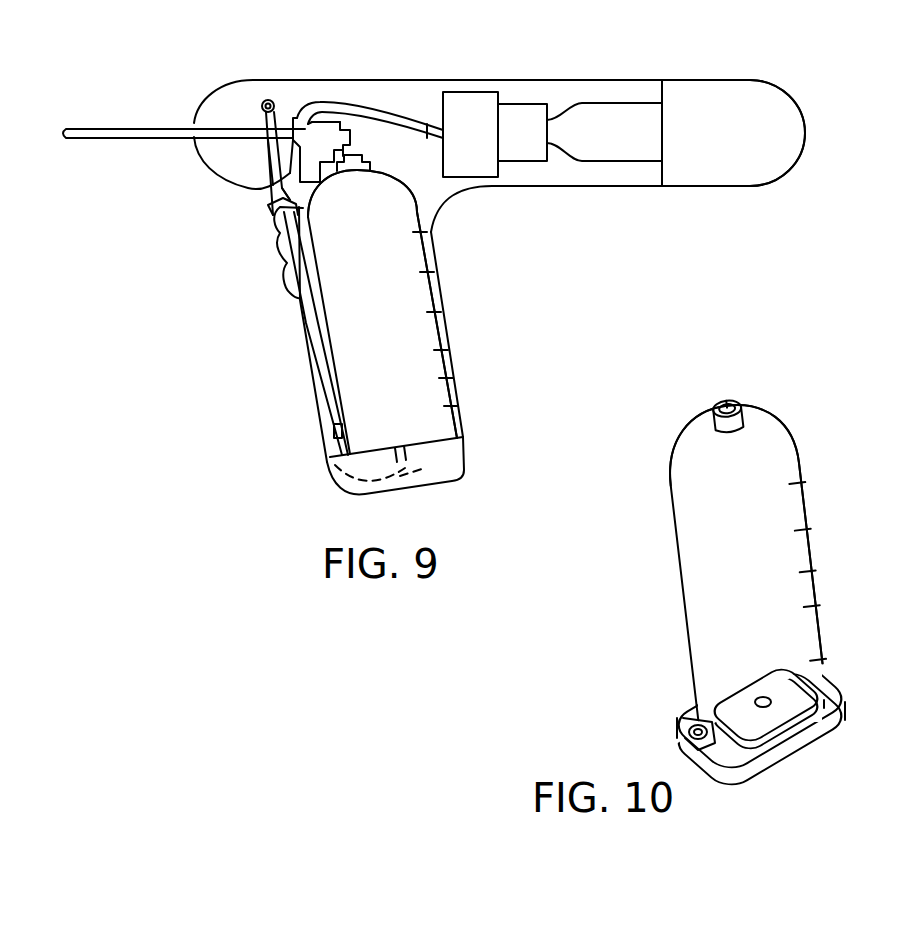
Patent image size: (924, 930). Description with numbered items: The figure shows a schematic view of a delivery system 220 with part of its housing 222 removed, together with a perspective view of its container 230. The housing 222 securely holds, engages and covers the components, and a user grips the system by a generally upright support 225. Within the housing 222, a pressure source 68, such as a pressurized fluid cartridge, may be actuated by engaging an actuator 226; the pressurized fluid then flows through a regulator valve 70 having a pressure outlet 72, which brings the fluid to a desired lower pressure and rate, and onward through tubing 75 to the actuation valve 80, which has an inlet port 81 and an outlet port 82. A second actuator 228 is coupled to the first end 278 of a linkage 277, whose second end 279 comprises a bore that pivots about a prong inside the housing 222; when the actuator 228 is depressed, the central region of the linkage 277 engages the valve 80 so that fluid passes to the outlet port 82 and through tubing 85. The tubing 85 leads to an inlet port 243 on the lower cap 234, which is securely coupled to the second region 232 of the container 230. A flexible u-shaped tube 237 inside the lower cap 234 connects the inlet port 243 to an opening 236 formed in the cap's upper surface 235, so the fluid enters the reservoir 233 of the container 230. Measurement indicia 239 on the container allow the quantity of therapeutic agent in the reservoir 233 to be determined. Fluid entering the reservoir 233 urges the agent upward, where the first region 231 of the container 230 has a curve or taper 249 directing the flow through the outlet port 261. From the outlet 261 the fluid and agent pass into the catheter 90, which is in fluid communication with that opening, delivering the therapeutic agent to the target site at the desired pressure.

In FIG. 9, the pressure source 68 is at (606, 153).
In FIG. 9, the regulator valve 70 is at (514, 162).
In FIG. 9, the pressure outlet 72 is at (427, 112).
In FIG. 9, the tubing 75 is at (368, 108).
In FIG. 9, the actuation valve 80 is at (290, 112).
In FIG. 9, the inlet port 81 is at (328, 108).
In FIG. 9, the outlet port 82 is at (278, 180).
In FIG. 9, the tubing 85 is at (313, 352).
In FIG. 9, the catheter 90 is at (126, 120).
In FIG. 9, the system 220 is at (226, 64).
In FIG. 9, the housing 222 is at (564, 93).
In FIG. 9, the generally upright support 225 is at (438, 303).
In FIG. 9, the actuator 226 is at (733, 178).
In FIG. 9, the actuator 228 is at (280, 262).
In FIG. 9, the container 230 is at (445, 329).
In FIG. 10, the container 230 is at (692, 607).
In FIG. 10, the first region 231 is at (770, 446).
In FIG. 10, the second region 232 is at (838, 710).
In FIG. 9, the reservoir 233 is at (436, 410).
In FIG. 10, the reservoir 233 is at (796, 607).
In FIG. 9, the lower cap 234 is at (448, 463).
In FIG. 10, the lower cap 234 is at (766, 777).
In FIG. 10, the upper surface 235 is at (812, 690).
In FIG. 9, the opening 236 is at (398, 452).
In FIG. 10, the opening 236 is at (771, 705).
In FIG. 9, the flexible u-shaped tube 237 is at (350, 487).
In FIG. 9, the measurement indicia 239 is at (442, 352).
In FIG. 10, the measurement indicia 239 is at (804, 530).
In FIG. 9, the inlet port 243 is at (345, 455).
In FIG. 10, the inlet port 243 is at (694, 731).
In FIG. 9, the curve or taper 249 is at (428, 200).
In FIG. 10, the curve or taper 249 is at (702, 445).
In FIG. 9, the outlet port 261 is at (356, 147).
In FIG. 10, the outlet port 261 is at (737, 402).
In FIG. 9, the linkage 277 is at (258, 158).
In FIG. 9, the first end 278 is at (282, 204).
In FIG. 9, the second end 279 is at (270, 99).